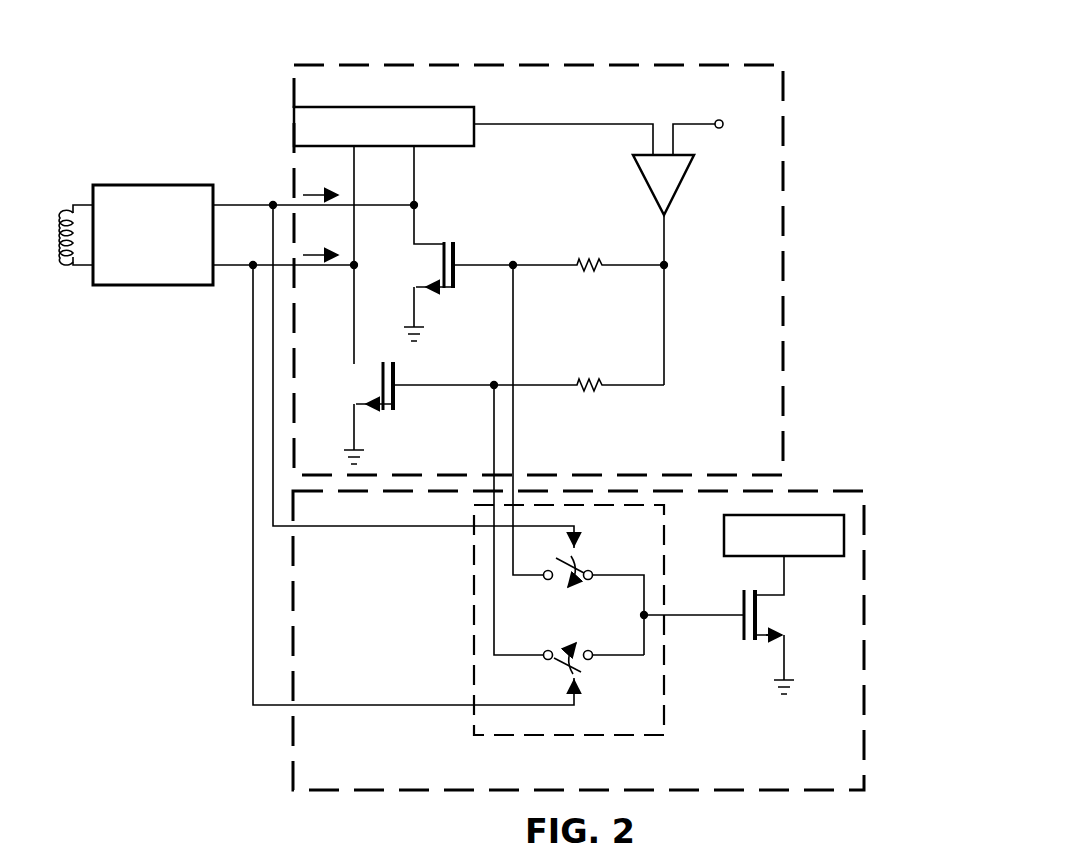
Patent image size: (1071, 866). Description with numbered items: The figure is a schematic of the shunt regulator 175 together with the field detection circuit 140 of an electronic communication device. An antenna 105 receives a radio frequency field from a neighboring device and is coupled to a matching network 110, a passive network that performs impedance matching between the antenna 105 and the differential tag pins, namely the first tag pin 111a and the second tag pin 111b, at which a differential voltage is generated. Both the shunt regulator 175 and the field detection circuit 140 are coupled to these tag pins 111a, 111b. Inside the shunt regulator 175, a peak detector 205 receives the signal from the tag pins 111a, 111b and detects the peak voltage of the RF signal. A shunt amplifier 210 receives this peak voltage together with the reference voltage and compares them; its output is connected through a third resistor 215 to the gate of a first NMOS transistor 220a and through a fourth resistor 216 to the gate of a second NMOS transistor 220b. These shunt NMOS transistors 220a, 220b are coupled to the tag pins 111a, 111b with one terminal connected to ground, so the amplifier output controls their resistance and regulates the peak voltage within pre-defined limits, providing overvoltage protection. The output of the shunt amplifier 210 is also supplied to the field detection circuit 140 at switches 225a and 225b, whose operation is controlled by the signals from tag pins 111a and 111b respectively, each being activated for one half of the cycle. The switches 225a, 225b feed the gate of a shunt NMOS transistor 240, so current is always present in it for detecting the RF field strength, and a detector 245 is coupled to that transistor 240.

The antenna 105 is at (63, 213).
The matching network 110 is at (150, 185).
The first tag pin 111a is at (253, 203).
The second tag pin 111b is at (233, 267).
The shunt regulator 175 is at (685, 61).
The peak detector 205 is at (442, 147).
The shunt amplifier 210 is at (683, 185).
The resistor R3 215 is at (590, 268).
The resistor R4 216 is at (591, 388).
The first NMOS transistor 220a is at (457, 250).
The second NMOS transistor 220b is at (396, 398).
The field detection circuit 140 is at (290, 735).
The switch 225a is at (592, 568).
The switch 225b is at (591, 670).
The shunt NMOS transistor 240 is at (740, 627).
The detector 245 is at (812, 556).